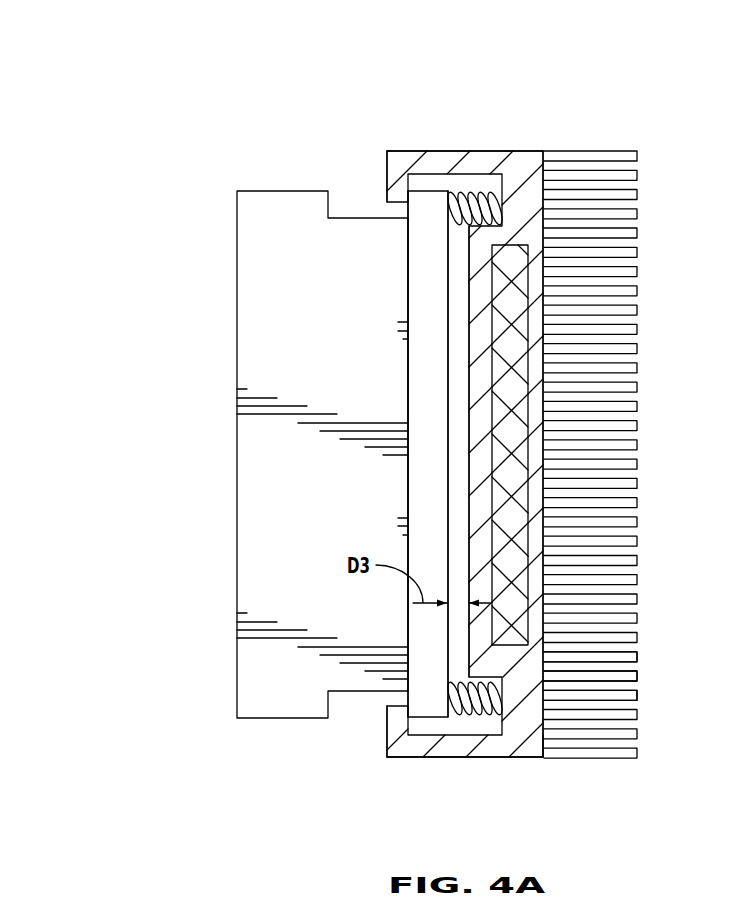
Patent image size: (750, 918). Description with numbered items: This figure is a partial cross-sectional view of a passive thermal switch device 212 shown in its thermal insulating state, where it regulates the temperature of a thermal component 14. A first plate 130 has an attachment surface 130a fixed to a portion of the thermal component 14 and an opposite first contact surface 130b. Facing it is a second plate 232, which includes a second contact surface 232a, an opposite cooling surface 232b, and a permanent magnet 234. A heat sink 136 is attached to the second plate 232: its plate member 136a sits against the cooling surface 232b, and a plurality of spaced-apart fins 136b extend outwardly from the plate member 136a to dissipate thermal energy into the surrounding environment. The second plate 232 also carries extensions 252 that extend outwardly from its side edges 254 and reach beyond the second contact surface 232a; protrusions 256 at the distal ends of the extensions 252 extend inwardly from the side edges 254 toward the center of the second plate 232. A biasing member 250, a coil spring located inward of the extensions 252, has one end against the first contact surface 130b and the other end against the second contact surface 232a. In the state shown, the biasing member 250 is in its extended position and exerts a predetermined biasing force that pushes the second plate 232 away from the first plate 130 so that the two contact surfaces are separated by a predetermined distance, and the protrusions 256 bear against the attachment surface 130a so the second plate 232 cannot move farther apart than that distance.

The thermal component 14 is at (221, 278).
The first plate 130 is at (417, 212).
The attachment surface 130a is at (410, 282).
The first contact surface 130b is at (452, 468).
The passive thermal switch device 212 is at (564, 97).
The second plate 232 is at (526, 148).
The second contact surface 232a is at (465, 328).
The cooling surface 232b is at (534, 470).
The permanent magnet 234 is at (510, 367).
The biasing member 250 is at (480, 185).
The extensions 252 is at (432, 163).
The side edges 254 is at (508, 150).
The protrusions 256 is at (387, 188).
The heat sink 136 is at (654, 212).
The plate member 136a is at (543, 745).
The fins 136b is at (634, 695).